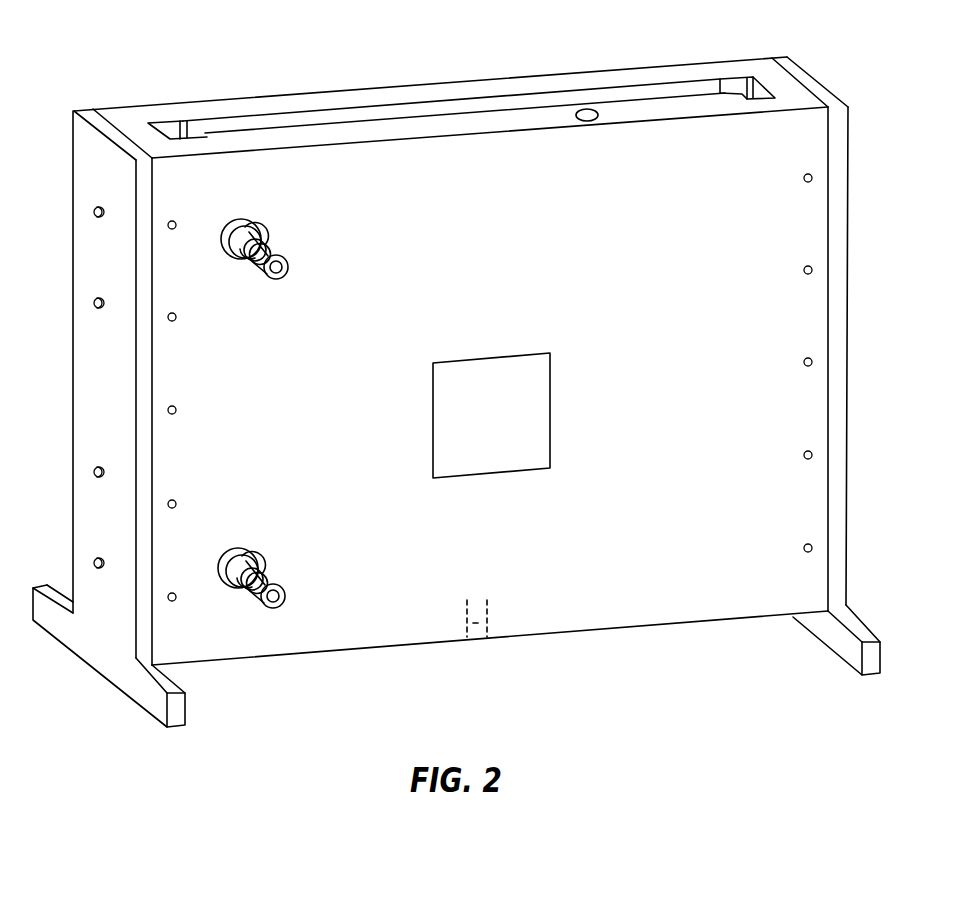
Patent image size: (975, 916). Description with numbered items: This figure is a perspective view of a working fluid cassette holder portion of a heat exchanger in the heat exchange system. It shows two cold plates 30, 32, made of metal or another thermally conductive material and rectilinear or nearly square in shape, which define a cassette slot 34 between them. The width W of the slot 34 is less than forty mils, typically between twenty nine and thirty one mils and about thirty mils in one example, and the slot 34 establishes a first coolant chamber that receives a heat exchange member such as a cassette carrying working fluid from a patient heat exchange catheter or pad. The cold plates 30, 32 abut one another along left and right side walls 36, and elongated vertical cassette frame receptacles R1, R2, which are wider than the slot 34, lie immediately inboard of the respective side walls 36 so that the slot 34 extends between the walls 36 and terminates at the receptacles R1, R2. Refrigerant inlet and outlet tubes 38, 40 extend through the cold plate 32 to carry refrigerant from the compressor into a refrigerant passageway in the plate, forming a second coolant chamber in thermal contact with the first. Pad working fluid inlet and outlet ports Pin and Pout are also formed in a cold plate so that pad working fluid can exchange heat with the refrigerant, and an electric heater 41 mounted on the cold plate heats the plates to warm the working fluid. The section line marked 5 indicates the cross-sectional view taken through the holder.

The cold plate 30 is at (480, 90).
The cold plate 32 is at (787, 88).
The cassette slot 34 is at (287, 122).
The side walls 36 is at (137, 137).
The refrigerant inlet tube 38 is at (290, 248).
The refrigerant outlet tube 40 is at (287, 578).
The electric heater 41 is at (490, 356).
The cassette frame receptacle R1 is at (163, 121).
The cassette frame receptacle R2 is at (737, 79).
The slot width W is at (438, 150).
The pad working fluid outlet Pout is at (585, 109).
The pad working fluid inlet Pin is at (472, 640).
The section line 5- 5 is at (133, 156).